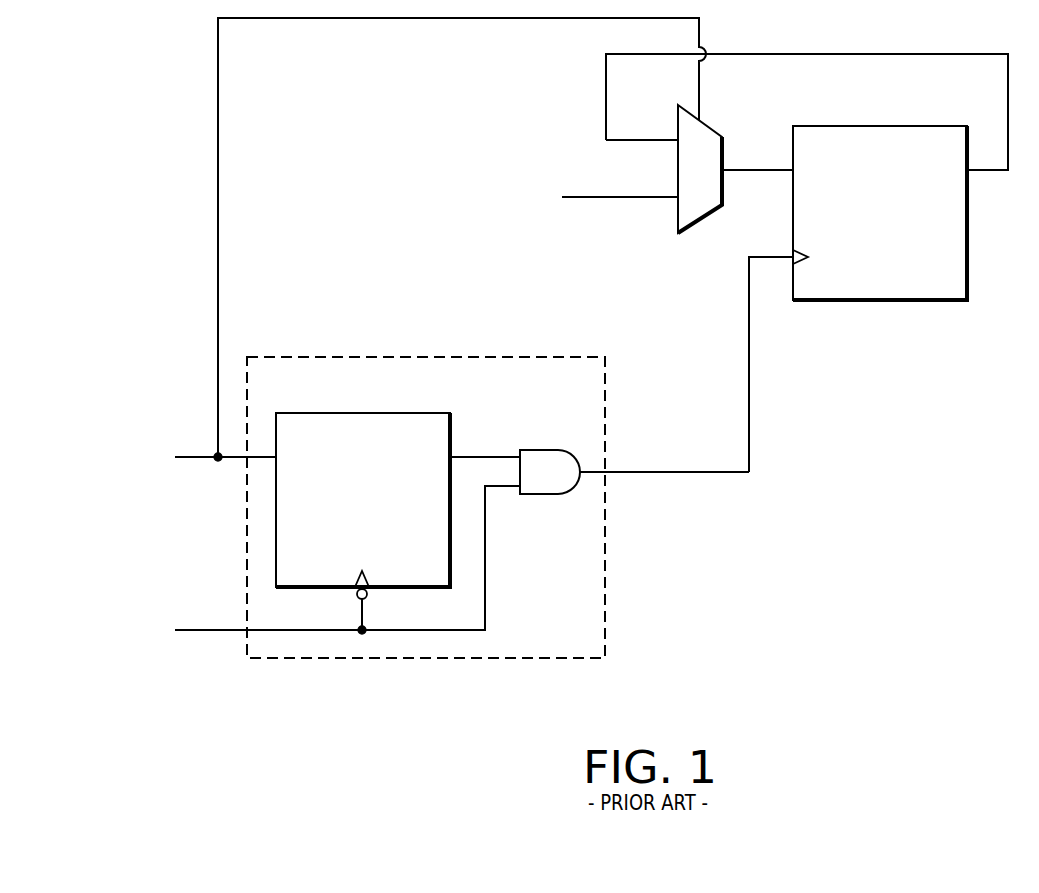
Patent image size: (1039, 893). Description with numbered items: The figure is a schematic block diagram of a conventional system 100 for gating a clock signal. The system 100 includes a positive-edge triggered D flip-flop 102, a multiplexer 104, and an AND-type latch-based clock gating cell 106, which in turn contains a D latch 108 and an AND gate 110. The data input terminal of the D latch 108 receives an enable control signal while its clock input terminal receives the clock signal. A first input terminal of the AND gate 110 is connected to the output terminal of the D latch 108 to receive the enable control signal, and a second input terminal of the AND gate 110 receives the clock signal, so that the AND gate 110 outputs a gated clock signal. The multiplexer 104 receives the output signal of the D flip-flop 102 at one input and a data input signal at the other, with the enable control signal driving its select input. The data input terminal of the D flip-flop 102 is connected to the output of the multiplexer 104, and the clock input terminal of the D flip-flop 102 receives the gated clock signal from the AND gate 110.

The system 100 is at (527, 371).
The D flip-flop 102 is at (880, 301).
The multiplexer 104 is at (696, 222).
The clock gating cell 106 is at (444, 357).
The D latch 108 is at (362, 413).
The AND gate 110 is at (536, 450).